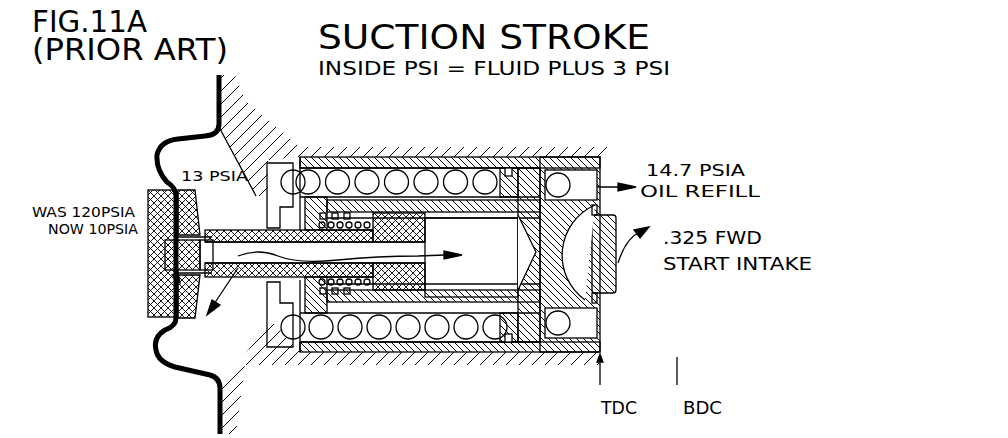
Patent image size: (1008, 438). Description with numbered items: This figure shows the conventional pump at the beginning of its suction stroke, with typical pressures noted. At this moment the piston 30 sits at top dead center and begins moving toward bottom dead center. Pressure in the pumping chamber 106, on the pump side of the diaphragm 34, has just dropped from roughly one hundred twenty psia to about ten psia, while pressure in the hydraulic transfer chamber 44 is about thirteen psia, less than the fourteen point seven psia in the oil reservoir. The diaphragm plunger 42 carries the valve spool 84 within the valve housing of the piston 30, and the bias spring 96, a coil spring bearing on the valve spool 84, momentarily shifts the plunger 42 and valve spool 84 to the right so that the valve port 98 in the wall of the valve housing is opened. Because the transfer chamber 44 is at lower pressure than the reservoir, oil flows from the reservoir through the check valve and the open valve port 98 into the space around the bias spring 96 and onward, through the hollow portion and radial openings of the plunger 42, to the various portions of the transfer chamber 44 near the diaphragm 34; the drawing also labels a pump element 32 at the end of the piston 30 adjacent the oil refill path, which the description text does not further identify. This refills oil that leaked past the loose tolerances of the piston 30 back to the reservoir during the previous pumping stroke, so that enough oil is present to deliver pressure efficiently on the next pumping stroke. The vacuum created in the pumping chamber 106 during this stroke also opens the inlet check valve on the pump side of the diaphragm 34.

The piston 30 is at (455, 365).
The cylinder end wall 32 is at (561, 155).
The diaphragm 34 is at (178, 137).
The diaphragm plunger 42 is at (251, 212).
The transfer chamber 44 is at (207, 354).
The valve spool 84 is at (400, 226).
The bias spring 96 is at (333, 224).
The valve port 98 is at (372, 227).
The pumping chamber 106 is at (110, 258).